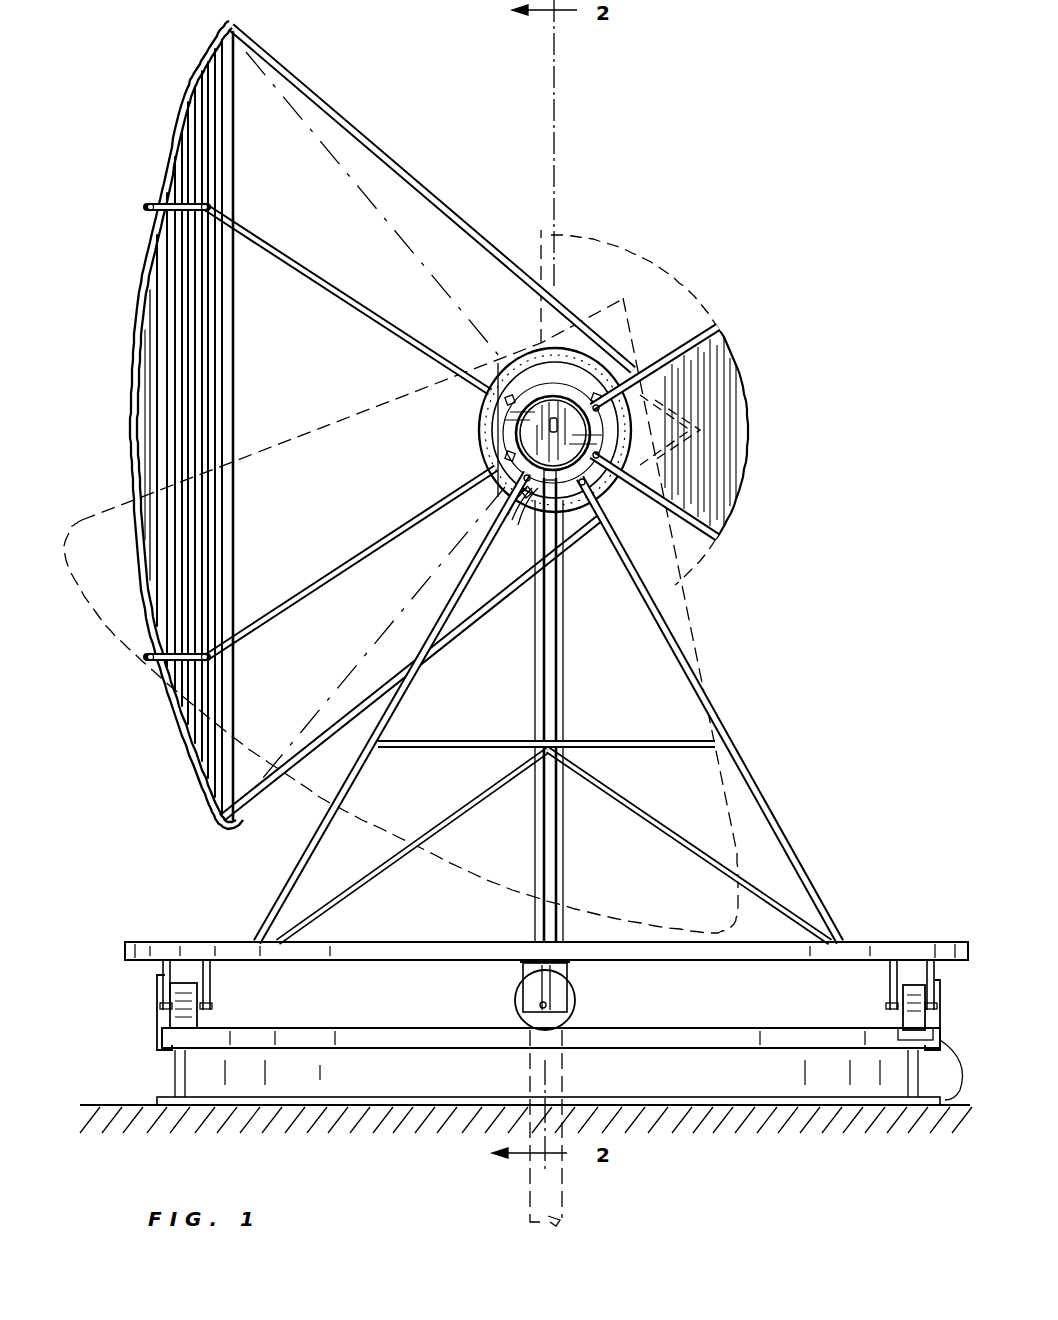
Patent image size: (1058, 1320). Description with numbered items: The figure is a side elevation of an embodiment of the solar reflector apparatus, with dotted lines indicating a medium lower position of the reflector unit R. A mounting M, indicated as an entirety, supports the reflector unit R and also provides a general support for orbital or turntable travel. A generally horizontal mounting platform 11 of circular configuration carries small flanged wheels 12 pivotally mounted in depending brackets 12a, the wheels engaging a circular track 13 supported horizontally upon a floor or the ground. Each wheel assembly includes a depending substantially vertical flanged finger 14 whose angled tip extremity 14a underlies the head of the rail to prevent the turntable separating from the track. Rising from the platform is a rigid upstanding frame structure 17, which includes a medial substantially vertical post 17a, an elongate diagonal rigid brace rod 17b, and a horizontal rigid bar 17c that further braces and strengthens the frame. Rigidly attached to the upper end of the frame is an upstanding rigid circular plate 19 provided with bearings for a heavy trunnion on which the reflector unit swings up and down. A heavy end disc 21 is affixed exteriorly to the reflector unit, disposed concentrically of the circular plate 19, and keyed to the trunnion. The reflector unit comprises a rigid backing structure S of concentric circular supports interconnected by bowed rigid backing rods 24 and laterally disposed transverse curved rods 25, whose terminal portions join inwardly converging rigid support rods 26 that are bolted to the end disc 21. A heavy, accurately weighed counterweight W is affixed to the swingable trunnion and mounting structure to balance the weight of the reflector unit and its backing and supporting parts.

The mounting platform 11 is at (890, 942).
The flanged wheels 12 is at (578, 1010).
The depending brackets 12a is at (530, 968).
The circular track 13 is at (423, 1080).
The flanged finger 14 is at (158, 1013).
The angled tip extremity 14a is at (168, 1052).
The upstanding frame structure 17 is at (525, 706).
The vertical post 17a is at (558, 708).
The diagonal brace rods 17b is at (305, 860).
The horizontal rigid bar 17c is at (415, 742).
The circular plate 19 is at (524, 440).
The end disc 21 is at (492, 404).
The bowed rigid backing rods 24 is at (226, 45).
The transverse curved rods 25 is at (148, 207).
The support rods 26 is at (455, 230).
The reflector unit R is at (178, 124).
The backing structure S is at (136, 305).
The counterweight W is at (738, 387).
The mounting M is at (878, 758).